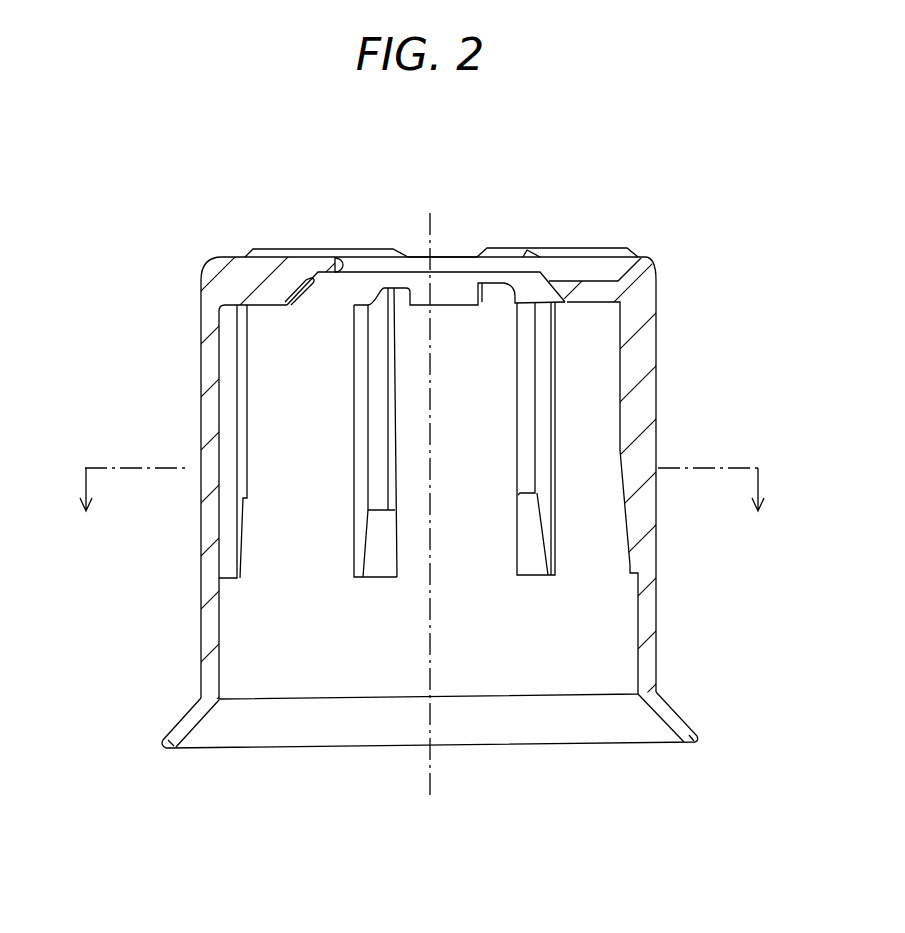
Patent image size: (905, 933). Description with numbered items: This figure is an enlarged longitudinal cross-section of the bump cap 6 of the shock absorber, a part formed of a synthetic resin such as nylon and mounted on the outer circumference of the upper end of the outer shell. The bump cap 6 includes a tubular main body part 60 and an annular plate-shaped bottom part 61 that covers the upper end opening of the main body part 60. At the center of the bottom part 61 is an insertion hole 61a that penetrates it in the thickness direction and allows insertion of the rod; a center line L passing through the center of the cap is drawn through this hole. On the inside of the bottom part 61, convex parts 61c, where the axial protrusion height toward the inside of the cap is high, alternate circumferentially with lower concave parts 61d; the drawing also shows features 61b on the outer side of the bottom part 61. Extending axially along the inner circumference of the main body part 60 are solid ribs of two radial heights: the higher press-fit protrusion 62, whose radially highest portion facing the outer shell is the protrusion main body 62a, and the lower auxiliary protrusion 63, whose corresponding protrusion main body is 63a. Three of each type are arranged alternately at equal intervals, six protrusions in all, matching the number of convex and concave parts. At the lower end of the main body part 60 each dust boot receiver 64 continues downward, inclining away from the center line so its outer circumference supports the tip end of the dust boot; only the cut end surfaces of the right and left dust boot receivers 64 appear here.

The bump cap 6 is at (182, 245).
The main body part 60 is at (201, 560).
The bottom part 61 is at (600, 238).
The insertion hole 61a is at (348, 258).
The projection of lid 61b is at (300, 249).
The convex part 61c is at (268, 307).
The concave part 61d is at (491, 303).
The press-fit protrusion 62 is at (246, 455).
The protrusion main body of the press-fit protrusion 62a is at (523, 478).
The auxiliary protrusion 63 is at (381, 425).
The protrusion main body of the auxiliary protrusion 63a is at (377, 490).
The dust boot receiver 64 is at (178, 722).